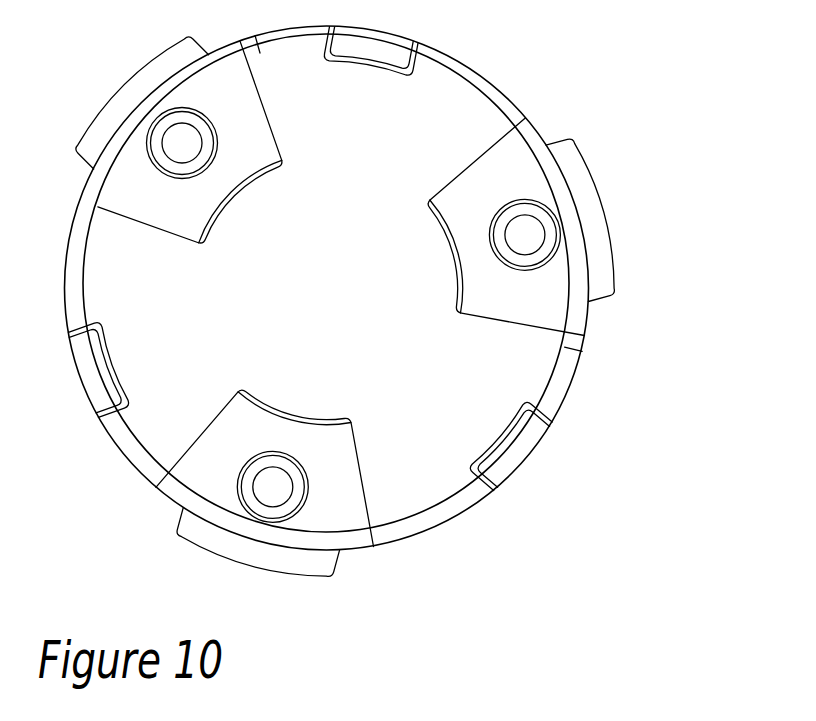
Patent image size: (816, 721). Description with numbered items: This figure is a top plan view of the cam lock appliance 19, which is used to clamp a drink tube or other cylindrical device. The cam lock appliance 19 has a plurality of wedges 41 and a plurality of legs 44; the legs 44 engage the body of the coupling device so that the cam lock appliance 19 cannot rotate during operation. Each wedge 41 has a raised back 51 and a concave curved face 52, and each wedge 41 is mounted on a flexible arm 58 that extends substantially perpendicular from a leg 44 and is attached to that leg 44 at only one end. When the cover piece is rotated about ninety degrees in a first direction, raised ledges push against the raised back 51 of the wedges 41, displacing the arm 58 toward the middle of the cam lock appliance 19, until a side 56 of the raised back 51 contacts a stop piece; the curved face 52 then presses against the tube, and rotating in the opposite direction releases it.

The cam lock appliance 19 is at (386, 322).
The wedge 41 is at (305, 442).
The leg 44 is at (90, 377).
The raised back 51 is at (588, 212).
The concave curved face 52 is at (242, 193).
The side 56 is at (340, 570).
The flexible arm 58 is at (494, 92).